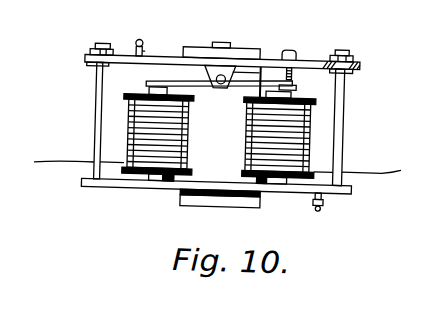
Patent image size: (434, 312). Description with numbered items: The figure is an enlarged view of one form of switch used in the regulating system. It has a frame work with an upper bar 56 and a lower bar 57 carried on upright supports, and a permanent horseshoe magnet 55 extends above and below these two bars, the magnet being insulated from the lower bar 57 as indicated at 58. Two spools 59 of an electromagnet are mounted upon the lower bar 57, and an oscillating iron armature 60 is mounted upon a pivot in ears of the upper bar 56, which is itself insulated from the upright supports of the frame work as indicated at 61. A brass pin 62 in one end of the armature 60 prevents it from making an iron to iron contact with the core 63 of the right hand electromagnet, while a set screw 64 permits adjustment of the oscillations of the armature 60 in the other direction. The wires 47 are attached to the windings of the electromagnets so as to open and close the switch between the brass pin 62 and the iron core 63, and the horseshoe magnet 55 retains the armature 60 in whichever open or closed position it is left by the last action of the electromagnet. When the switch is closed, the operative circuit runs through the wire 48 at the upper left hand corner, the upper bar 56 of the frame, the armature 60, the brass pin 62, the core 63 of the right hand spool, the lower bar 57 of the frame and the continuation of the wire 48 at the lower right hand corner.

The wires 47 is at (58, 163).
The wire 48 is at (133, 41).
The permanent horseshoe magnet 55 is at (204, 119).
The upper bar 56 is at (158, 54).
The lower bar 57 is at (146, 186).
The insulation 58 is at (264, 193).
The spools 59 is at (137, 134).
The oscillating iron armature 60 is at (246, 80).
The insulation 61 is at (90, 63).
The brass pin 62 is at (298, 80).
The core 63 is at (294, 89).
The set screw 64 is at (299, 46).